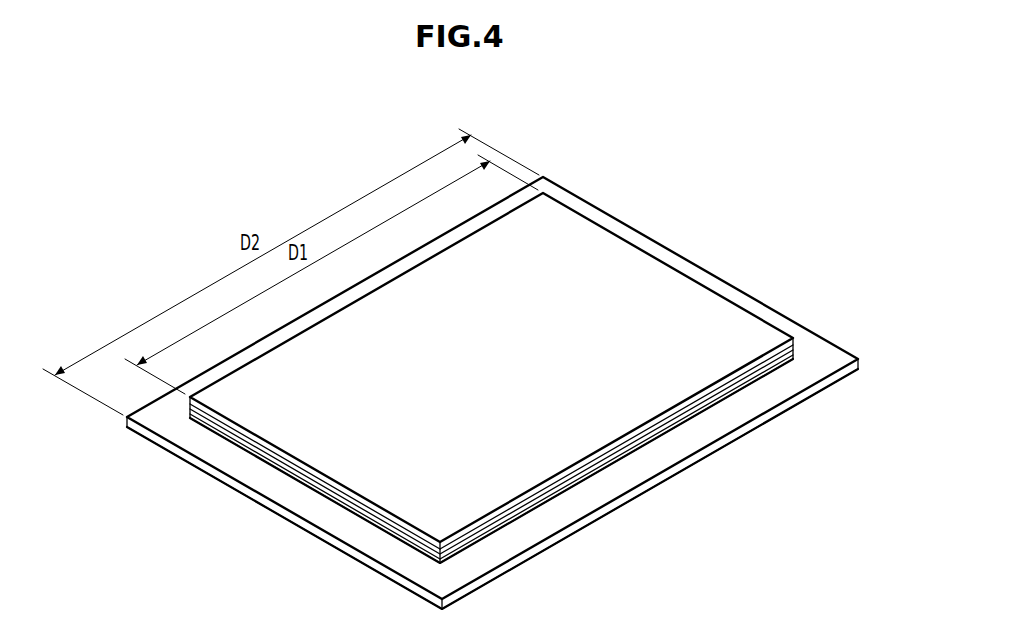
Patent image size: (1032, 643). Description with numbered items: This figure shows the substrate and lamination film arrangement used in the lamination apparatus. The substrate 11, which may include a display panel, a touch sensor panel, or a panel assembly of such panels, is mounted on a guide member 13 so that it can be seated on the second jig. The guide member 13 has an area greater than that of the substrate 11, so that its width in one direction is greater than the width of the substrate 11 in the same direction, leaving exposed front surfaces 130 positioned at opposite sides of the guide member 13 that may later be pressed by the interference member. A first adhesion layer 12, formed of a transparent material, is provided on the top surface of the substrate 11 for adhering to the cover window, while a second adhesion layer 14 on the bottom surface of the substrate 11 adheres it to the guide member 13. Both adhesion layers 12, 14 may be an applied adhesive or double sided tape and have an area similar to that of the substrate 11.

The substrate 11 is at (797, 348).
The first adhesion layer 12 is at (652, 285).
The guide member 13 is at (750, 402).
The second adhesion layer 14 is at (797, 362).
The front surfaces 130 is at (695, 270).